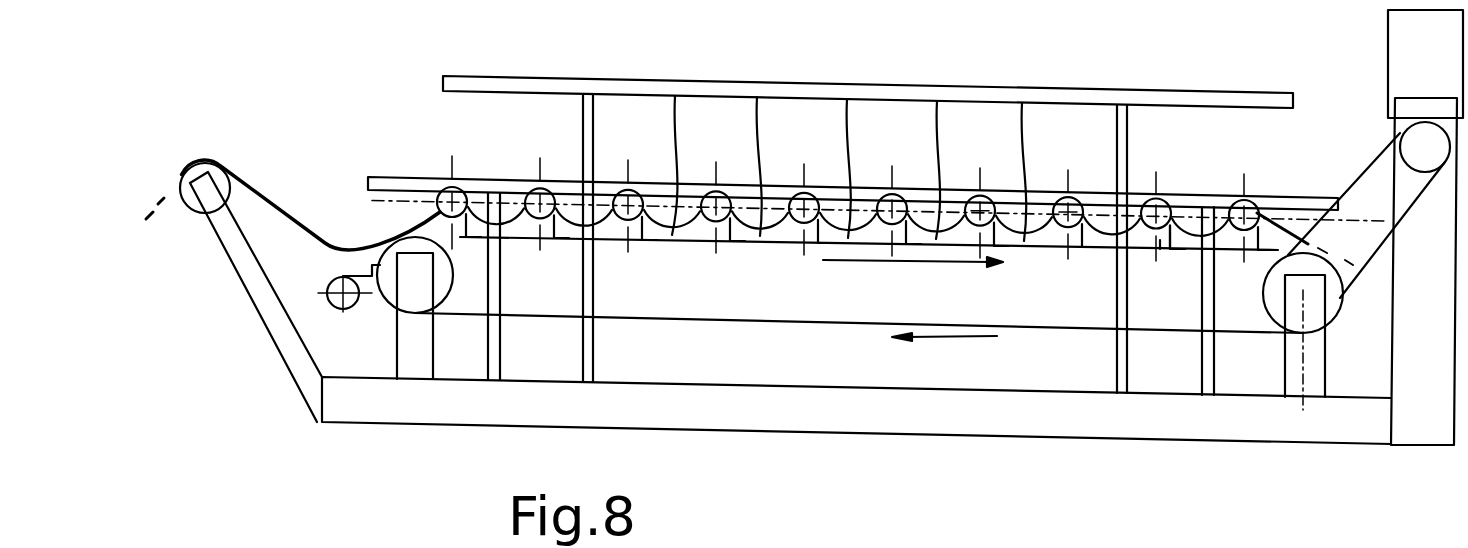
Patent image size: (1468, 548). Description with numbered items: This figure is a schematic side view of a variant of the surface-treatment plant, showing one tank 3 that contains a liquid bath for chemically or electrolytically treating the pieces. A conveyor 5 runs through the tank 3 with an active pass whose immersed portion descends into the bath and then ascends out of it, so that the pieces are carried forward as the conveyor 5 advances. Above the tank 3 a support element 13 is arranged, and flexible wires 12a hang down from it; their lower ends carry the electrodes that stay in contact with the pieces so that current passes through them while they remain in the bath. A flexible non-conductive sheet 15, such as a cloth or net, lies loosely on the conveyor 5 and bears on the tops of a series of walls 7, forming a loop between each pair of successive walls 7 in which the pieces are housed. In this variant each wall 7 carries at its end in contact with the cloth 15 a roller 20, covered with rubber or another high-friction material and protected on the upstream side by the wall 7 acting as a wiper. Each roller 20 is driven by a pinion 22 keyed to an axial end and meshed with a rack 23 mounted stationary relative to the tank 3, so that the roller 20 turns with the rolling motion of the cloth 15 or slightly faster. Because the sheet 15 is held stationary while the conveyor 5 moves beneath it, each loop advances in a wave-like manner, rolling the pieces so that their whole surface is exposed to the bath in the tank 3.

The tank 3 is at (1135, 417).
The conveyor 5 is at (708, 325).
The wall 7 is at (1173, 243).
The flexible wire 12a is at (677, 110).
The support element 13 is at (538, 82).
The sheet 15 is at (287, 224).
The roller 20 is at (1066, 227).
The pinion 22 is at (972, 222).
The rack 23 is at (393, 185).